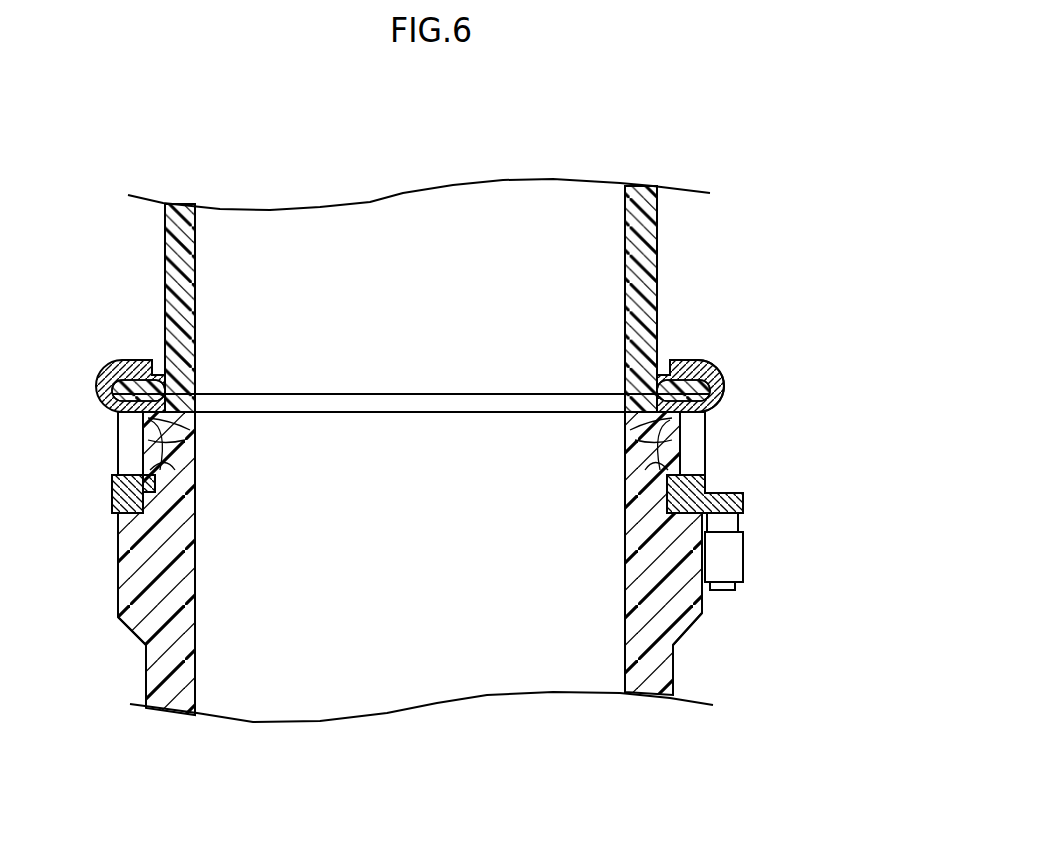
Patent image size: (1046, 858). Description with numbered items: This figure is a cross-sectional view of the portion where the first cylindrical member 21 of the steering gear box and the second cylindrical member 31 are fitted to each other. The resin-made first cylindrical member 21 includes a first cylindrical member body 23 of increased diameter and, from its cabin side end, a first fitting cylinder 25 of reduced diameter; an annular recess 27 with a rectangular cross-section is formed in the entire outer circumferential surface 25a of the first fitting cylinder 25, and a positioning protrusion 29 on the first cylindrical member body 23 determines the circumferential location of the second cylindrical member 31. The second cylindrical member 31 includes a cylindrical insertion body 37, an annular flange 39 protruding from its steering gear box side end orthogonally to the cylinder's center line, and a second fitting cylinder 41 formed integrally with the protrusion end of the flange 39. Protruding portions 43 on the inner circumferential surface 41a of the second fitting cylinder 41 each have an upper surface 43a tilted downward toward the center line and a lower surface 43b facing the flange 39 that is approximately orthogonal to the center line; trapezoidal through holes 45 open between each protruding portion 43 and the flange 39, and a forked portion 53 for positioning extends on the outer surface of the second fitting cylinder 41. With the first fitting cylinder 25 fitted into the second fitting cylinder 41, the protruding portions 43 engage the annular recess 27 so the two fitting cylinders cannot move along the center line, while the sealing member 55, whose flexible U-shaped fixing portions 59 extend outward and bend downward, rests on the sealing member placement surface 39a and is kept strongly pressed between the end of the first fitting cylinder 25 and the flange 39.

The first cylindrical member 21 is at (680, 672).
The first cylindrical member body 23 is at (690, 628).
The first fitting cylinder 25 is at (706, 432).
The outer circumferential surface 25a is at (138, 435).
The annular recess 27 is at (113, 490).
The positioning protrusion 29 is at (746, 556).
The second cylindrical member 31 is at (664, 220).
The insertion body 37 is at (625, 234).
The flange 39 is at (170, 376).
The sealing member placement surface 39a is at (175, 410).
The second fitting cylinder 41 is at (118, 432).
The inner circumferential surface 41a is at (680, 516).
The protruding portion 43 is at (158, 485).
The upper surface 43a is at (155, 492).
The lower surface 43b is at (160, 470).
The through hole 45 is at (170, 440).
The forked portion 53 is at (724, 585).
The sealing member 55 is at (726, 378).
The fixing portion 59 is at (107, 362).